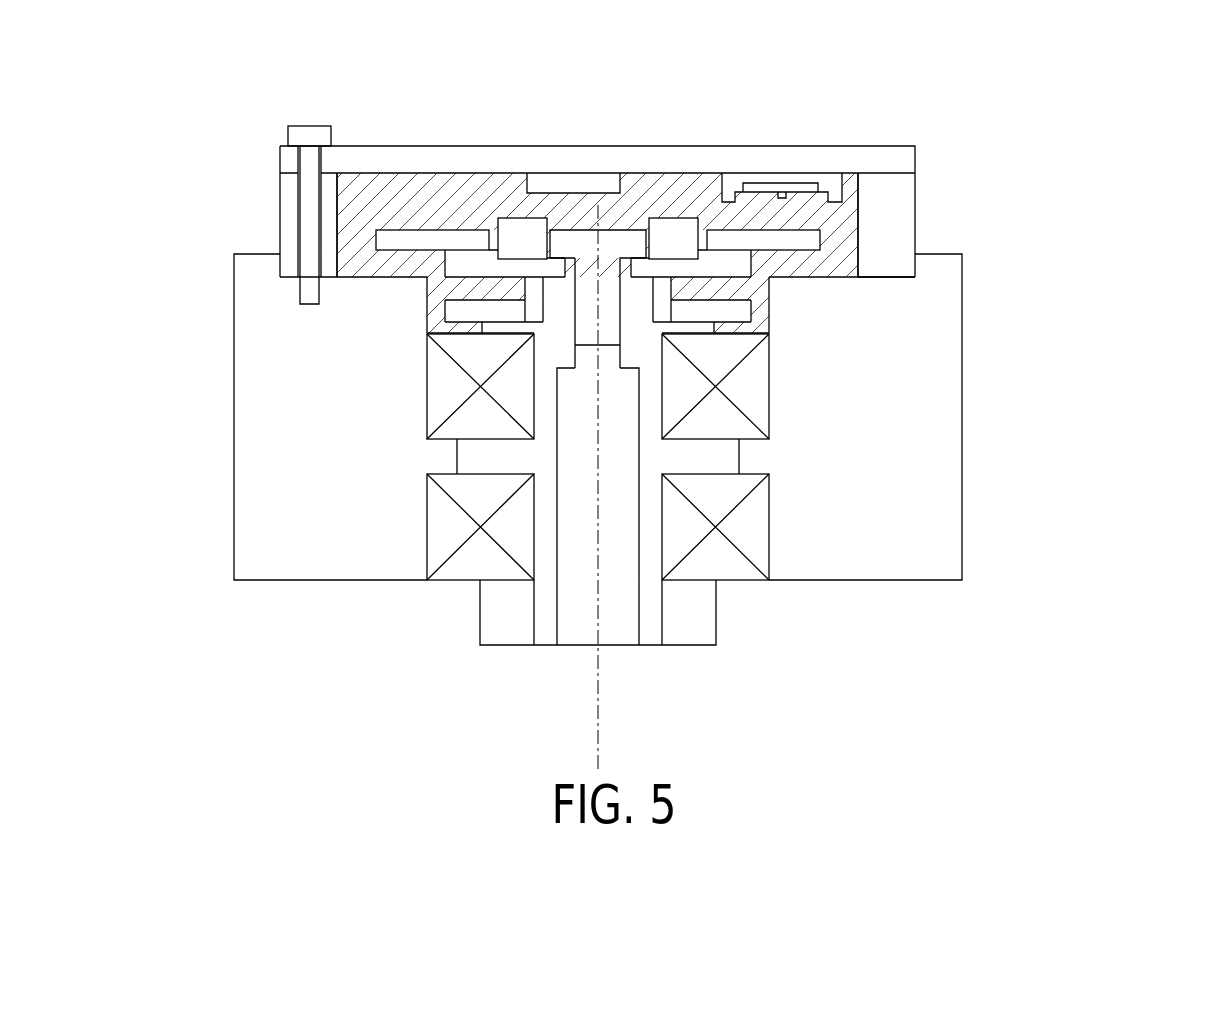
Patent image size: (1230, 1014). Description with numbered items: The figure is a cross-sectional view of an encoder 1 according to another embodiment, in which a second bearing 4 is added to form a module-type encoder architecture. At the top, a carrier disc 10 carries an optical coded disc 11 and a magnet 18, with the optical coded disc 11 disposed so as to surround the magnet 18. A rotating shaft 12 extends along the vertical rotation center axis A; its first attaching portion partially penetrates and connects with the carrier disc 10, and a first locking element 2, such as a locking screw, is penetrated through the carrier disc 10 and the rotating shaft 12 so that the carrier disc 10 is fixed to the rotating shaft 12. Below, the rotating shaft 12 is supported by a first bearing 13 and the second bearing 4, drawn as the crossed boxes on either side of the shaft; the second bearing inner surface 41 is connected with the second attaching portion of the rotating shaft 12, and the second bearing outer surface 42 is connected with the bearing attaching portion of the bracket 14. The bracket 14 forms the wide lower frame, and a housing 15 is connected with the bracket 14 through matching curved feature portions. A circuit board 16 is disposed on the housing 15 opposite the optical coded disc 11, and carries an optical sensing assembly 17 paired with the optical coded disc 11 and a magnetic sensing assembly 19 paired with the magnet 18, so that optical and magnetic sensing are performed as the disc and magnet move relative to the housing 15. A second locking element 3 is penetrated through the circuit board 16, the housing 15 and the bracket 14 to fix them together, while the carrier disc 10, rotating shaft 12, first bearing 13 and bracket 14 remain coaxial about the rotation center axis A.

The encoder 1 is at (684, 404).
The first locking element 2 is at (622, 238).
The second locking element 3 is at (310, 142).
The second bearing 4 is at (559, 586).
The carrier disc 10 is at (733, 263).
The optical coded disc 11 is at (810, 237).
The rotating shaft 12 is at (549, 613).
The first bearing 13 is at (438, 410).
The bracket 14 is at (267, 407).
The housing 15 is at (893, 198).
The circuit board 16 is at (701, 160).
The optical sensing assembly 17 is at (795, 187).
The magnet 18 is at (522, 235).
The magnetic sensing assembly 19 is at (570, 182).
The second bearing inner surface 41 is at (534, 527).
The second bearing outer surface 42 is at (427, 527).
The rotation center axis A is at (580, 746).